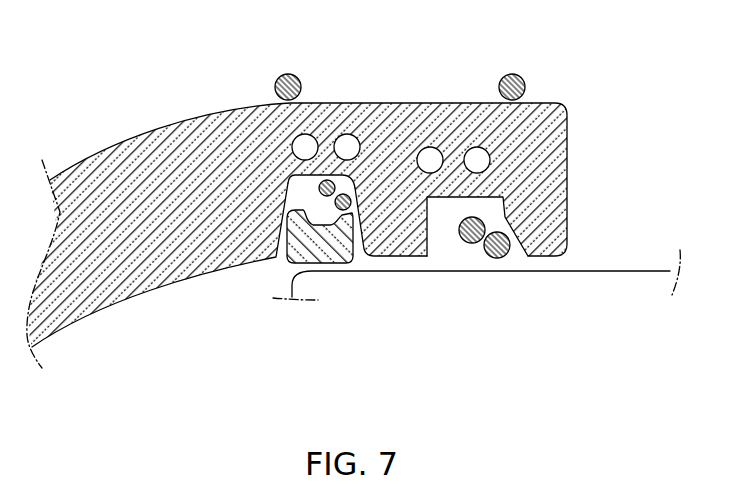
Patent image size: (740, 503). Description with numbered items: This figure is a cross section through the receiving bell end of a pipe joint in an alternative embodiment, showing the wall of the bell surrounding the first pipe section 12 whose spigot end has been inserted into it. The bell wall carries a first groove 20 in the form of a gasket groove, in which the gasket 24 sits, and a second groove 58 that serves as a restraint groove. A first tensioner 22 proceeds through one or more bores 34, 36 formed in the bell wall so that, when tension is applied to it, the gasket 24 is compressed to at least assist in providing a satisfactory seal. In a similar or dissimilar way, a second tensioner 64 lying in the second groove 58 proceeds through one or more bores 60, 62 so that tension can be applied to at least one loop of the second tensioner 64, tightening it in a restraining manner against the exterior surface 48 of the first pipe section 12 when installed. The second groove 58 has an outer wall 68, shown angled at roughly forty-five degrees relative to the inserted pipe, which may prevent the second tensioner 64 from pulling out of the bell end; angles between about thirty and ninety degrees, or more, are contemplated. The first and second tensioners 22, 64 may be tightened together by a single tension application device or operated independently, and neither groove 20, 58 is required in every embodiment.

The first pipe section 12 is at (642, 282).
The first groove 20 is at (288, 187).
The first tensioner 22 is at (313, 197).
The gasket 24 is at (292, 261).
The bore 34 is at (349, 134).
The bore 36 is at (307, 134).
The exterior surface 48 is at (604, 270).
The second groove 58 is at (510, 208).
The bore 60 is at (491, 160).
The bore 62 is at (431, 147).
The second tensioner 64 is at (480, 248).
The outer wall 68 is at (513, 258).